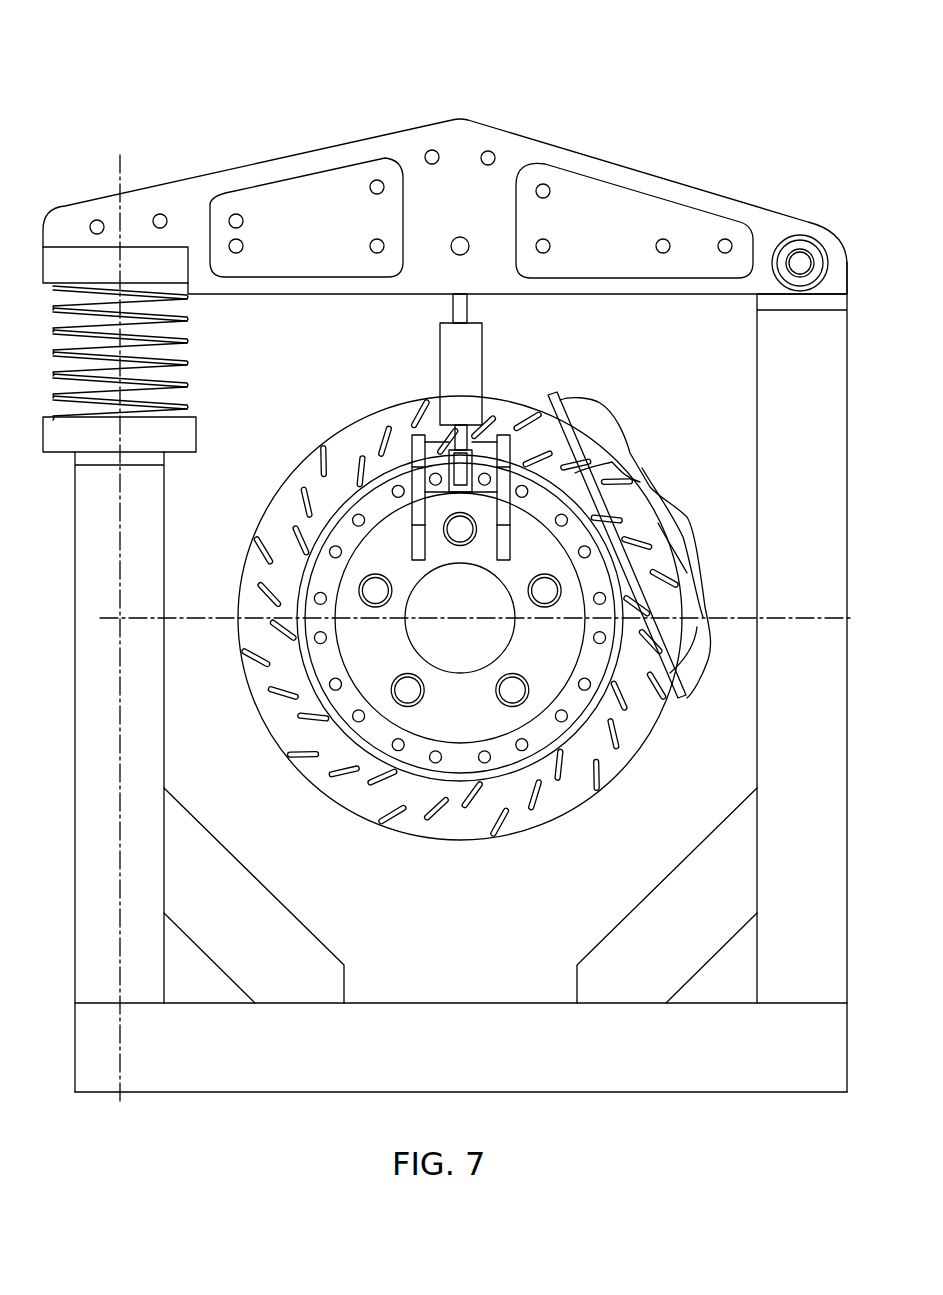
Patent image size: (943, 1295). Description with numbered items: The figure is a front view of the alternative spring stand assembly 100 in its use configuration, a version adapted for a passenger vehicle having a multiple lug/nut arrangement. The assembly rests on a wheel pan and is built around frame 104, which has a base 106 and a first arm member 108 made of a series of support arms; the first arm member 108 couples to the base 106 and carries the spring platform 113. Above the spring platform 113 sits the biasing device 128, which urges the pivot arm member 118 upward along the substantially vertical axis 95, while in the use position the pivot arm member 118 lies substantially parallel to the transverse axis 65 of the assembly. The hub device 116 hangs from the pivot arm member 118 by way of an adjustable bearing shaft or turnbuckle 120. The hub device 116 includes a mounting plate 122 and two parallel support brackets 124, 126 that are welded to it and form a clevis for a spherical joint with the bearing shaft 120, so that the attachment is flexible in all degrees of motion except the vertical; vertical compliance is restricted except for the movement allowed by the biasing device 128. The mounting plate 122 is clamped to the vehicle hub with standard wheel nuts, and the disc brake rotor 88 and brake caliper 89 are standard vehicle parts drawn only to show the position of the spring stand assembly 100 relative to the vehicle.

The spring stand assembly 100 is at (163, 128).
The vertical axis 95 is at (120, 165).
The transverse axis 65 is at (213, 618).
The pivot arm member 118 is at (578, 155).
The biasing device 128 is at (187, 370).
The spring platform 113 is at (196, 433).
The bearing shaft 120 is at (440, 372).
The support bracket 124 is at (417, 512).
The support bracket 126 is at (504, 513).
The mounting plate 122 is at (355, 655).
The disc brake rotor 88 is at (545, 815).
The hub device 116 is at (454, 756).
The brake caliper 89 is at (627, 448).
The frame 104 is at (736, 387).
The base 106 is at (440, 1013).
The first arm member 108 is at (184, 753).